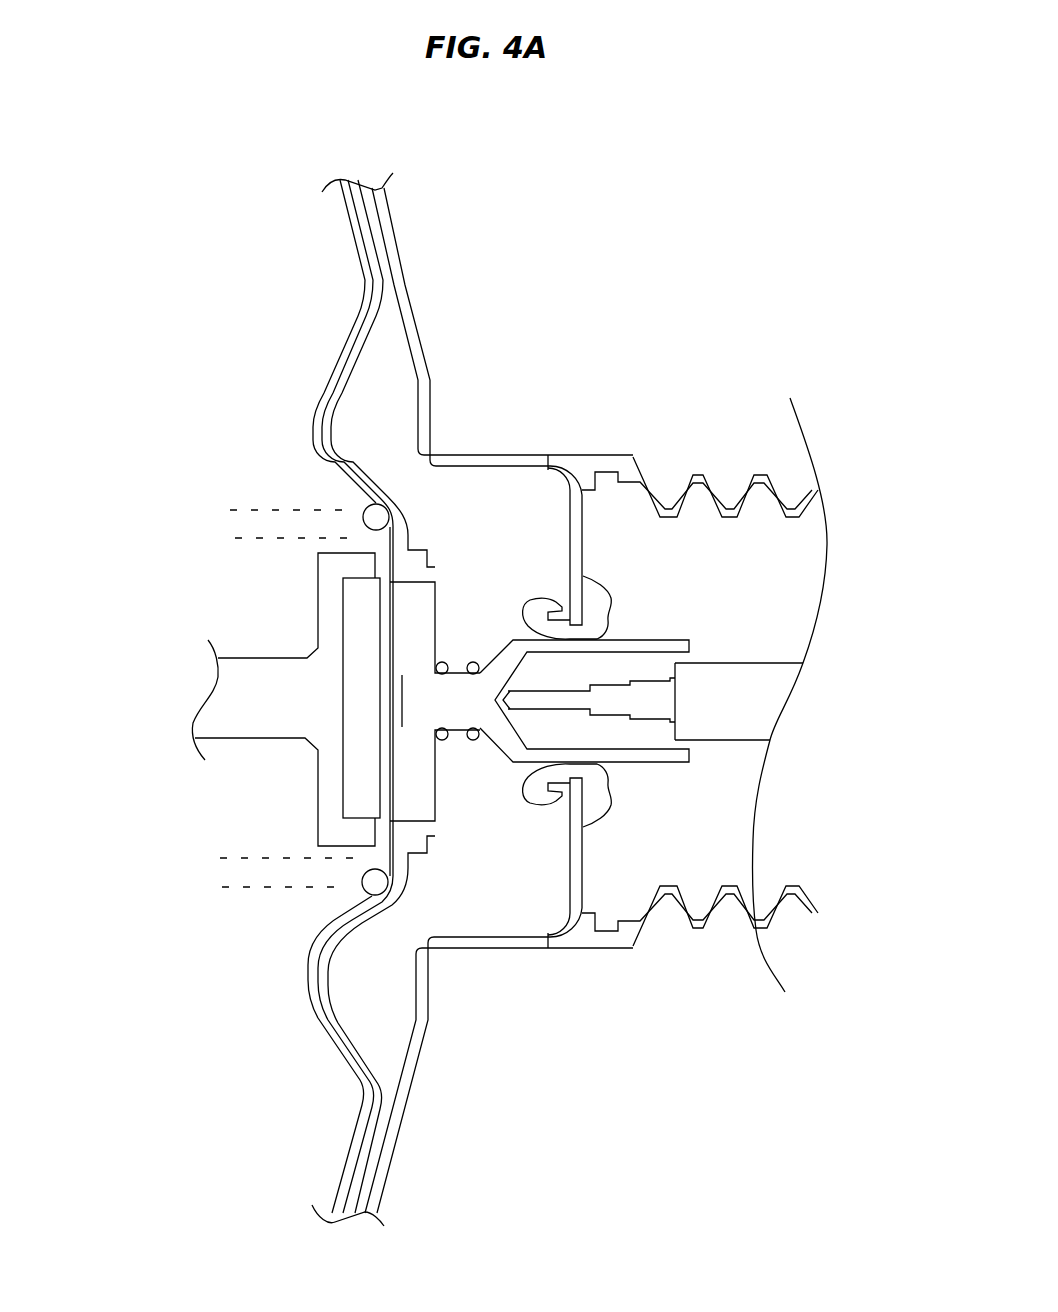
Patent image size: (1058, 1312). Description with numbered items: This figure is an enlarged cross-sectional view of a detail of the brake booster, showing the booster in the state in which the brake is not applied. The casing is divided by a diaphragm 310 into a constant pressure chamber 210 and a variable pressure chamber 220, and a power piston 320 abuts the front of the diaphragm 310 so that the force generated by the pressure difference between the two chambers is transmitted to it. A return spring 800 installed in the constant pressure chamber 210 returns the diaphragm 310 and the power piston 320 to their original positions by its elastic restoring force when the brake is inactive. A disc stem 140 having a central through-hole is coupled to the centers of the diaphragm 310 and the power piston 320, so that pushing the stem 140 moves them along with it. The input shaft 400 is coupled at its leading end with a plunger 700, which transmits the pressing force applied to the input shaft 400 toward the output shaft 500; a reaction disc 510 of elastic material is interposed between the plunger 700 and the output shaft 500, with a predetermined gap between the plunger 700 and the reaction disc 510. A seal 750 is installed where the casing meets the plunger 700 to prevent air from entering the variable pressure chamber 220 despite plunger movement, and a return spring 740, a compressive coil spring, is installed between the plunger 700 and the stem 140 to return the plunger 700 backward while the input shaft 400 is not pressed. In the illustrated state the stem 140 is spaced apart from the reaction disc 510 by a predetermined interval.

The disc stem 140 is at (418, 622).
The constant pressure chamber 210 is at (300, 312).
The variable pressure chamber 220 is at (553, 547).
The diaphragm 310 is at (373, 240).
The power piston 320 is at (343, 217).
The input shaft 400 is at (645, 703).
The output shaft 500 is at (232, 708).
The reaction disc 510 is at (357, 782).
The plunger 700 is at (657, 762).
The return spring 740 is at (458, 740).
The seal 750 is at (600, 596).
The return spring 800 is at (272, 522).